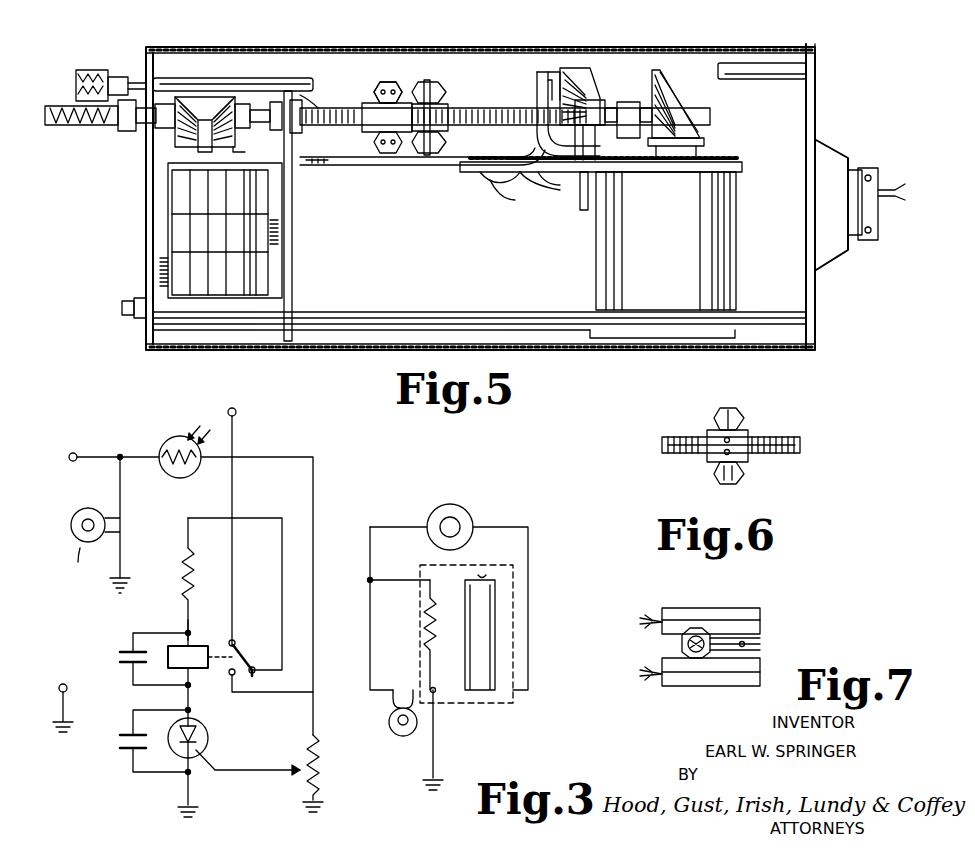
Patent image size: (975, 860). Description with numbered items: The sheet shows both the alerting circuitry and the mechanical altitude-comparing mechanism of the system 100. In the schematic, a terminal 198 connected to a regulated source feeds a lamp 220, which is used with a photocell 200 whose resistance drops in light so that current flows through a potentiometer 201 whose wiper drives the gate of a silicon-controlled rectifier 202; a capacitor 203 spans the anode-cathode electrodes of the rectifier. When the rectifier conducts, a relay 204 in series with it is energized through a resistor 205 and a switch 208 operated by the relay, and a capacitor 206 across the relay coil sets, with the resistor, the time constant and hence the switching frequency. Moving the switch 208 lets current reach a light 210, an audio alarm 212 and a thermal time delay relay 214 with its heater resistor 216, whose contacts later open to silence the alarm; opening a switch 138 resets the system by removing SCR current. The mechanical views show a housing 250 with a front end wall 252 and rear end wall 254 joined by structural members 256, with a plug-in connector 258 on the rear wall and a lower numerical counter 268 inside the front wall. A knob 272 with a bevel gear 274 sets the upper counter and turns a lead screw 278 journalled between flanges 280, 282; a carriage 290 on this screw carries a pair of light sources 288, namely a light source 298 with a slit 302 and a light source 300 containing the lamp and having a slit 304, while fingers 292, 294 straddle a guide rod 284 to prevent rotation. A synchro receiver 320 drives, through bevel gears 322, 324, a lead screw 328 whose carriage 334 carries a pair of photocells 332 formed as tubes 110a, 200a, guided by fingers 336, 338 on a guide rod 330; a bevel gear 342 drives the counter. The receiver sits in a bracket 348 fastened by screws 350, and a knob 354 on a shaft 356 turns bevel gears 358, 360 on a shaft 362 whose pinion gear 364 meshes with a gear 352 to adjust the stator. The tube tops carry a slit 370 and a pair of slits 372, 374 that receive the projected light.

In FIG. 5, the system 100 is at (662, 34).
In FIG. 3, the system 100 is at (360, 492).
In FIG. 5, the vertically elongated tube 110a is at (386, 153).
In FIG. 6, the vertically elongated tube 110a is at (738, 408).
In FIG. 5, the switch 138 is at (126, 323).
In FIG. 3, the terminal 198 is at (87, 444).
In FIG. 3, the photocell 200 is at (170, 440).
In FIG. 5, the vertically elongated tube 200a is at (376, 82).
In FIG. 6, the vertically elongated tube 200a is at (744, 468).
In FIG. 3, the potentiometer 201 is at (318, 770).
In FIG. 3, the silicon-controlled rectifier 202 is at (208, 738).
In FIG. 3, the capacitor 203 is at (128, 752).
In FIG. 3, the relay 204 is at (185, 646).
In FIG. 3, the resistor 205 is at (210, 560).
In FIG. 3, the capacitor 206 is at (128, 650).
In FIG. 3, the switch 208 is at (243, 640).
In FIG. 3, the light 210 is at (395, 735).
In FIG. 3, the audio alarm 212 is at (466, 512).
In FIG. 3, the thermal time delay relay 214 is at (515, 635).
In FIG. 3, the heater resistor 216 is at (445, 654).
In FIG. 3, the lamp 220 is at (169, 523).
In FIG. 5, the housing 250 is at (488, 50).
In FIG. 5, the front end wall 252 is at (146, 180).
In FIG. 5, the rear end wall 254 is at (816, 105).
In FIG. 5, the structural members 256 is at (768, 70).
In FIG. 5, the electrical plug-in type connector 258 is at (832, 270).
In FIG. 5, the numerical counter 268 is at (158, 235).
In FIG. 5, the knob 272 is at (58, 106).
In FIG. 5, the bevel gear 274 is at (186, 95).
In FIG. 7, the lead screw 278 is at (682, 645).
In FIG. 5, the flange 280 is at (305, 97).
In FIG. 5, the flange 282 is at (540, 150).
In FIG. 7, the guide rod 284 is at (760, 645).
In FIG. 5, the light sources 288 is at (432, 72).
In FIG. 7, the light sources 288 is at (640, 602).
In FIG. 5, the carriage 290 is at (446, 130).
In FIG. 7, the carriage 290 is at (690, 632).
In FIG. 7, the finger 292 is at (735, 632).
In FIG. 7, the finger 294 is at (728, 660).
In FIG. 5, the light source 298 is at (427, 155).
In FIG. 7, the light source 298 is at (716, 608).
In FIG. 5, the light source 300 is at (446, 90).
In FIG. 7, the light source 300 is at (698, 686).
In FIG. 5, the slit 302 is at (442, 155).
In FIG. 5, the slit 304 is at (418, 86).
In FIG. 5, the synchro receiver 320 is at (730, 235).
In FIG. 5, the bevel gear 322 is at (672, 138).
In FIG. 5, the bevel gear 324 is at (657, 90).
In FIG. 5, the lead screw 328 is at (488, 108).
In FIG. 6, the lead screw 328 is at (785, 438).
In FIG. 6, the guide rod 330 is at (672, 437).
In FIG. 5, the photocells 332 is at (372, 150).
In FIG. 6, the photocells 332 is at (758, 404).
In FIG. 5, the carriage 334 is at (372, 126).
In FIG. 6, the carriage 334 is at (712, 432).
In FIG. 6, the finger 336 is at (748, 438).
In FIG. 5, the finger 338 is at (228, 100).
In FIG. 6, the finger 338 is at (712, 458).
In FIG. 5, the bevel gear 342 is at (208, 125).
In FIG. 5, the bracket 348 is at (600, 175).
In FIG. 5, the screws 350 is at (540, 195).
In FIG. 5, the gear 352 is at (728, 158).
In FIG. 5, the knob 354 is at (90, 70).
In FIG. 5, the shaft 356 is at (288, 78).
In FIG. 5, the bevel gear 358 is at (572, 70).
In FIG. 5, the bevel gear 360 is at (600, 102).
In FIG. 5, the shaft 362 is at (590, 165).
In FIG. 5, the pinion gear 364 is at (576, 175).
In FIG. 6, the slit 370 is at (720, 412).
In FIG. 6, the slit 372 is at (716, 480).
In FIG. 6, the slit 374 is at (738, 484).